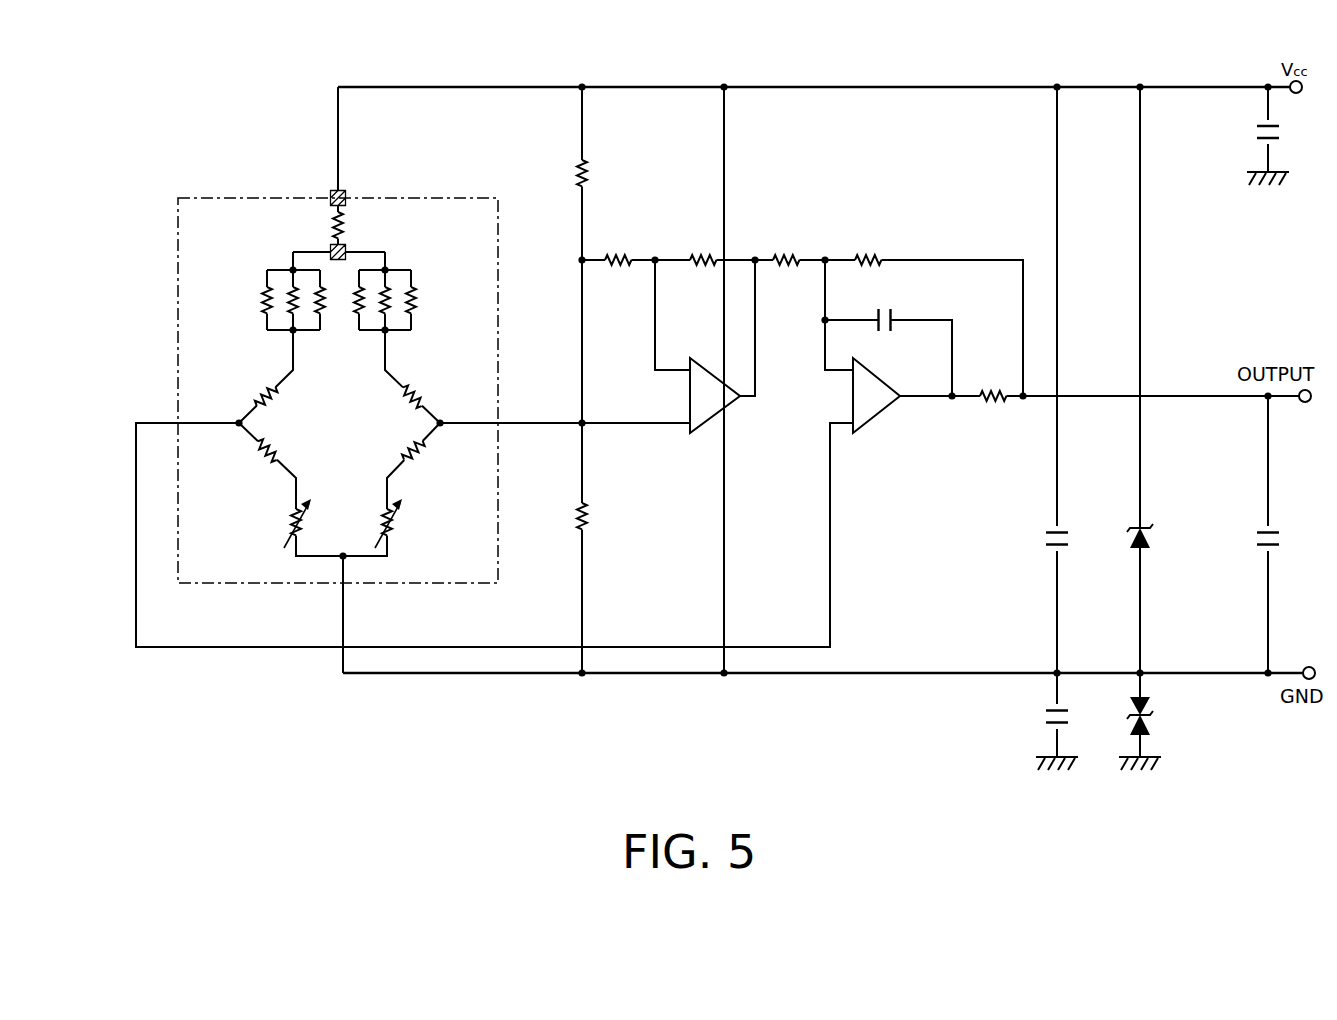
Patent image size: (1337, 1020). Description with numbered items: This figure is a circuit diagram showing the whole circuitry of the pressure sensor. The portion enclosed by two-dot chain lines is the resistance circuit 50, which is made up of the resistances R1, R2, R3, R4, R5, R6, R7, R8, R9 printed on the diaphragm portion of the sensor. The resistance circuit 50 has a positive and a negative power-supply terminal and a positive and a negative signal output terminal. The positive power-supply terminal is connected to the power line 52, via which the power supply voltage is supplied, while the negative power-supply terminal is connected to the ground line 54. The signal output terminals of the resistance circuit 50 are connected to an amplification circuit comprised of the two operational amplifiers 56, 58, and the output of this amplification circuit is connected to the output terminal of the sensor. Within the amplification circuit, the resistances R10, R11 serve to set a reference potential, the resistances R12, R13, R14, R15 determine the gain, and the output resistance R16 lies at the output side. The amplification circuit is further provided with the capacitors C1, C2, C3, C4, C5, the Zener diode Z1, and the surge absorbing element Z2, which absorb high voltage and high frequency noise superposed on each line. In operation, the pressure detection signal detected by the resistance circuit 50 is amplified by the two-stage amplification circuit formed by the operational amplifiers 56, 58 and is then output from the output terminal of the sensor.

The resistance circuit 50 is at (423, 198).
The power line 52 is at (868, 87).
The ground line 54 is at (945, 670).
The operational amplifier 56 is at (700, 428).
The operational amplifier 58 is at (873, 427).
The resistance R1 is at (417, 466).
The resistance R2 is at (262, 466).
The resistance R3 is at (414, 376).
The resistance R4 is at (262, 376).
The resistance R5 is at (366, 225).
The resistance R6 is at (403, 299).
The resistance R7 is at (275, 299).
The resistance R8 is at (386, 527).
The resistance R9 is at (298, 527).
The resistance for setting a reference potential R10 is at (557, 173).
The resistance for setting a reference potential R11 is at (606, 466).
The resistance for determining a gain R12 is at (618, 247).
The resistance for determining a gain R13 is at (705, 247).
The resistance for determining a gain R14 is at (790, 247).
The resistance for determining a gain R15 is at (924, 312).
The output resistance R16 is at (996, 380).
The capacitor C1 is at (888, 346).
The capacitor C2 is at (1069, 380).
The capacitor C3 is at (1046, 721).
The capacitor C4 is at (1281, 534).
The capacitor C5 is at (1254, 136).
The Zener diode Z1 is at (1151, 380).
The surge absorbing element Z2 is at (1153, 721).